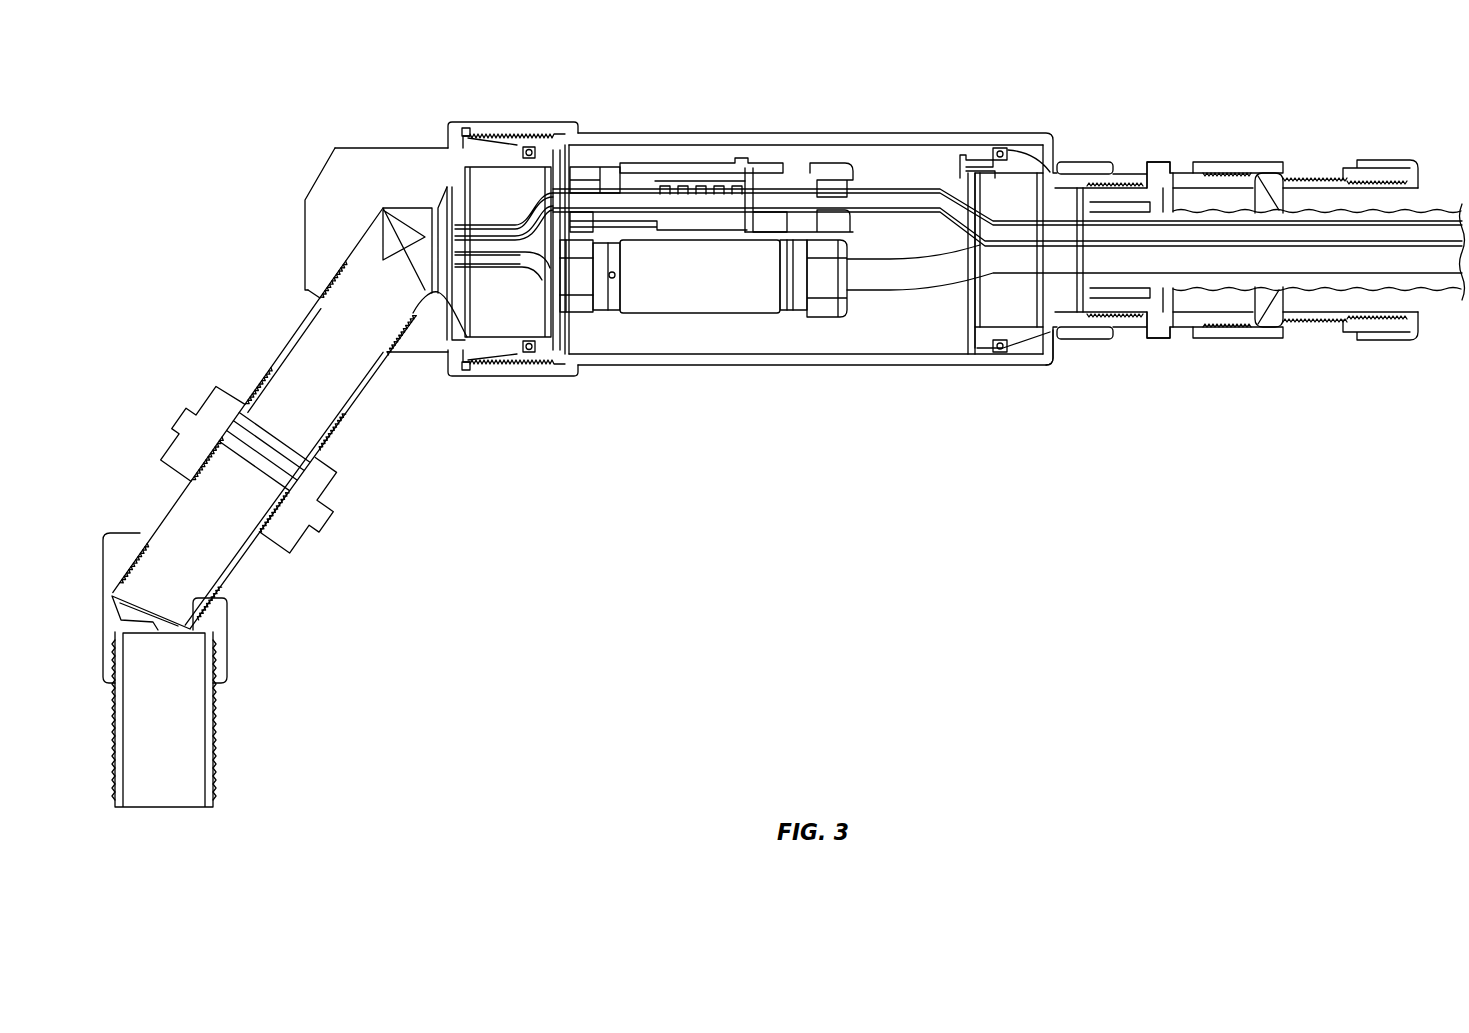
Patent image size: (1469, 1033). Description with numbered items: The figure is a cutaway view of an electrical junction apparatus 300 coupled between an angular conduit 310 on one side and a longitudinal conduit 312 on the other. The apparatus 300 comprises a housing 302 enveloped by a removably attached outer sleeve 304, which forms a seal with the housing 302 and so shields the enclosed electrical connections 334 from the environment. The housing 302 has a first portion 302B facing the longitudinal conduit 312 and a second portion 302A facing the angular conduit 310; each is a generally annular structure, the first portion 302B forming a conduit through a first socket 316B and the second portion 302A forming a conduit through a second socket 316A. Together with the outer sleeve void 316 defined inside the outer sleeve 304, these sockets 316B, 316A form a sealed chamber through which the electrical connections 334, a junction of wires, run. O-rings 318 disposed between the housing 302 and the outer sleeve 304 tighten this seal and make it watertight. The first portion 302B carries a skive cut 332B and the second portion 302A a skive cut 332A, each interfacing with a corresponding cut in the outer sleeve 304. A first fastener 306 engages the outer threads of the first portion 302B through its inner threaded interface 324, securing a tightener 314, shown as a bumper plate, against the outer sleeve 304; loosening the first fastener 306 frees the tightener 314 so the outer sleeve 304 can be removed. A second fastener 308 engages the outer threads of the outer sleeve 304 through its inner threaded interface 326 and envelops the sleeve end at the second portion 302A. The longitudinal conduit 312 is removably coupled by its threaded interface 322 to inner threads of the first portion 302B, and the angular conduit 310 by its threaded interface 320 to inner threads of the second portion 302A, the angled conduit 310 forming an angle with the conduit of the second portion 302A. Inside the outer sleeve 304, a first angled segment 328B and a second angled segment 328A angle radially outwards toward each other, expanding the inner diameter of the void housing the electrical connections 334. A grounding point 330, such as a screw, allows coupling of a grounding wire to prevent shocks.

The electrical junction apparatus 300 is at (248, 140).
The housing 302 is at (300, 230).
The second portion of the housing 302A is at (303, 200).
The first portion of the housing 302B is at (1055, 140).
The outer sleeve 304 is at (613, 132).
The first fastener 306 is at (1082, 162).
The second fastener 308 is at (468, 121).
The angular conduit 310 is at (188, 376).
The longitudinal conduit 312 is at (1307, 168).
The tightener 314 is at (1060, 342).
The outer sleeve void 316 is at (795, 147).
The second socket 316A is at (447, 188).
The first socket 316B is at (990, 312).
The O-rings 318 is at (530, 146).
The threaded interface of the angled conduit 320 is at (322, 290).
The threaded interface of the longitudinal conduit 322 is at (1135, 165).
The inner threaded interface of the first fastener 324 is at (1105, 340).
The inner threaded interface of the second fastener 326 is at (493, 373).
The second angled segment 328A is at (557, 343).
The first angled segment 328B is at (968, 340).
The grounding point 330 is at (958, 158).
The skive cut 332A is at (478, 150).
The skive cut 332B is at (1030, 160).
The electrical connections 334 is at (769, 320).